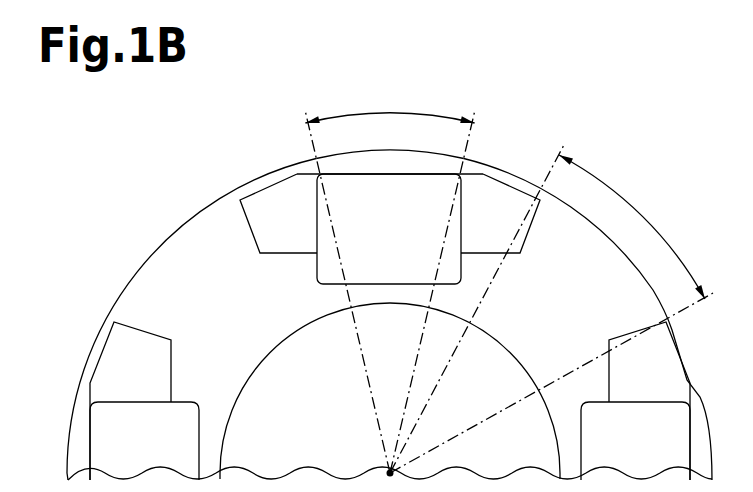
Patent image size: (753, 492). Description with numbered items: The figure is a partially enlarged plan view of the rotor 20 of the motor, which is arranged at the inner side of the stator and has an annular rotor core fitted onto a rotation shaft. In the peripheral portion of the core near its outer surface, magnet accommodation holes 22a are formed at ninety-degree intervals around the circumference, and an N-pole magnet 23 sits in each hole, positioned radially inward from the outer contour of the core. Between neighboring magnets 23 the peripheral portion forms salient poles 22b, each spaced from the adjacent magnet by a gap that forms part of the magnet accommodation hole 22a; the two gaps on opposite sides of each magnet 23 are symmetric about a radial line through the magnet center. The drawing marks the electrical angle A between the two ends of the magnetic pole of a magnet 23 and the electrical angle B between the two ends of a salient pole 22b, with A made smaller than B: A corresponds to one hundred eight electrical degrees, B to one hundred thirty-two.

The rotor 20 is at (389, 301).
The magnet accommodation hole 22a is at (390, 183).
The salient pole 22b is at (143, 263).
The magnet 23 is at (386, 284).
The electrical angle between the two ends of the magnet pole A is at (389, 118).
The electrical angle between the two ends of the salient pole B is at (636, 208).